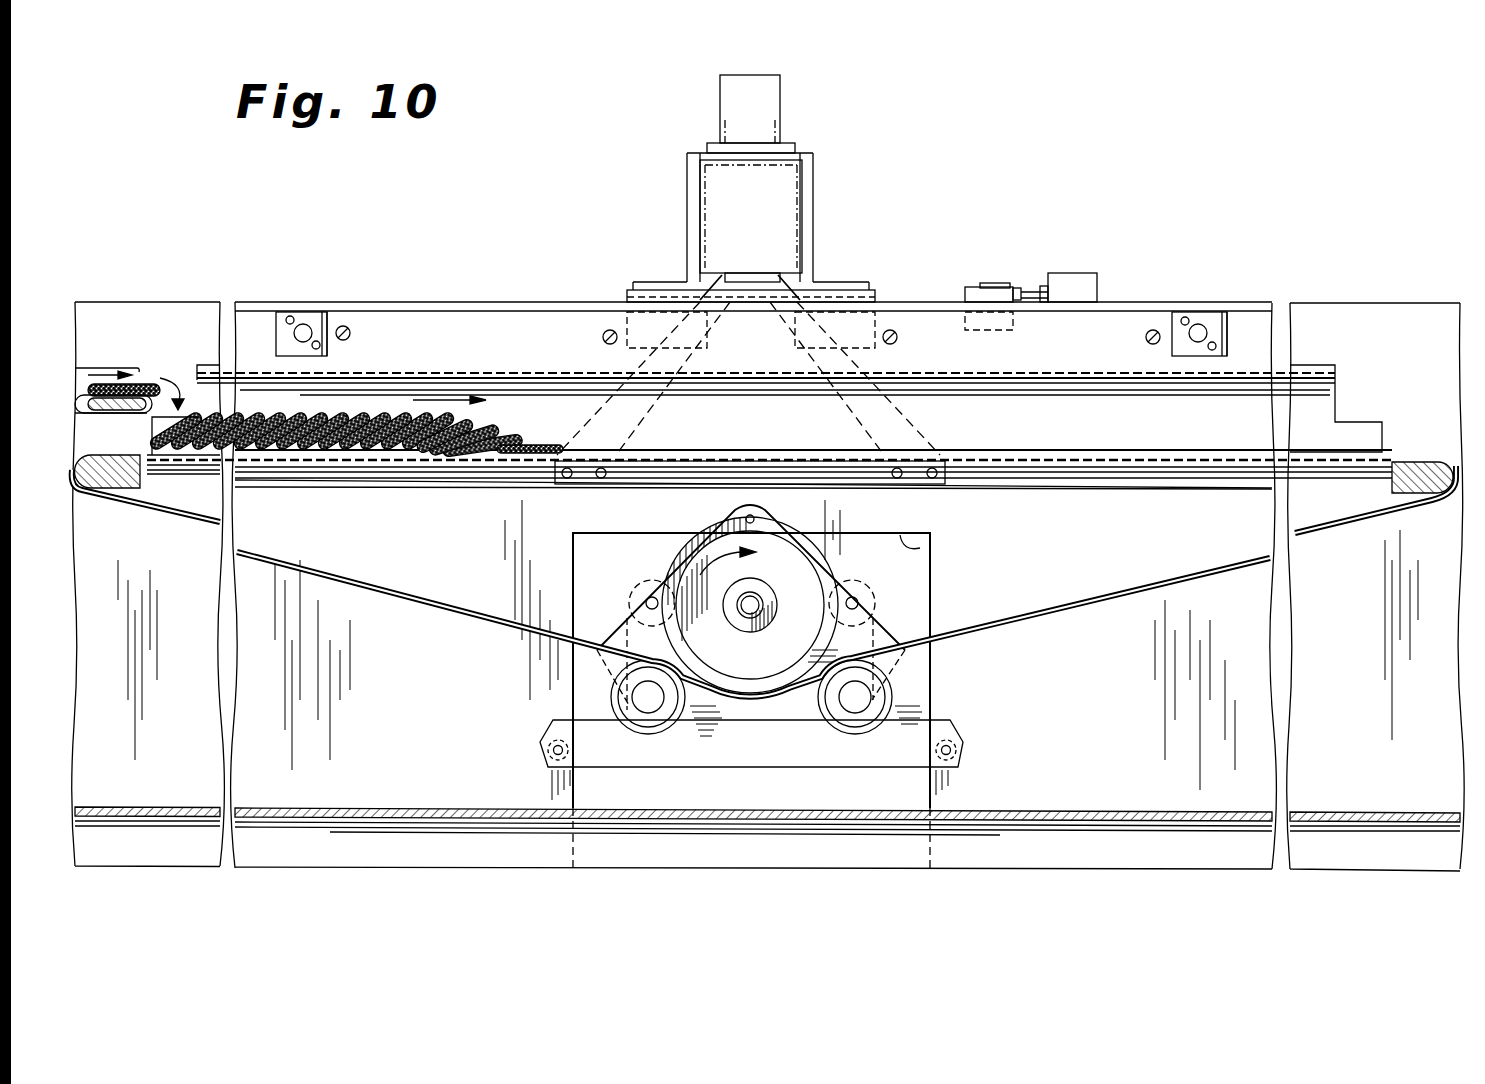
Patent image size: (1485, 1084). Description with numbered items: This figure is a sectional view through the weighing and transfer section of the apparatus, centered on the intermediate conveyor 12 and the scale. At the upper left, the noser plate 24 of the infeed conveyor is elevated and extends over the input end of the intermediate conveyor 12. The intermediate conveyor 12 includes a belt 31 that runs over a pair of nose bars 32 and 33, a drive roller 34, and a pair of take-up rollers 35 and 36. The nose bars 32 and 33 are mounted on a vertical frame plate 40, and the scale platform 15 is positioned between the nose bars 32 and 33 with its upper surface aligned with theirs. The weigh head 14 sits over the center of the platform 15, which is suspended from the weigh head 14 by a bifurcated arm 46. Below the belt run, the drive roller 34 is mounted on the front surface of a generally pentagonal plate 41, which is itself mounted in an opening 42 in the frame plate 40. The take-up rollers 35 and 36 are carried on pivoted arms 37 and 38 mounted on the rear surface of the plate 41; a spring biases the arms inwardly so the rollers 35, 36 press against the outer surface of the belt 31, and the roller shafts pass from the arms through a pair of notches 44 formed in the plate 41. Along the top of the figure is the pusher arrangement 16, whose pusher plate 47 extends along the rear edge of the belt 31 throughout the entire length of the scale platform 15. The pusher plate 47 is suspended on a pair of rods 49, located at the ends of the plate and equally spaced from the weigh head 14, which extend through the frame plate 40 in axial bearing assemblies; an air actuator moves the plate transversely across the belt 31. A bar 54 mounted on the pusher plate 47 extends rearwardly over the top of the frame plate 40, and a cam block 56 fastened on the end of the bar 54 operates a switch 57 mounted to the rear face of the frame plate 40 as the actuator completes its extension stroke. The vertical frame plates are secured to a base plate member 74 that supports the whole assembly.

The intermediate conveyor 12 is at (1160, 452).
The weigh head 14 is at (828, 123).
The scale platform 15 is at (660, 468).
The pusher arrangement 16 is at (1228, 322).
The noser plate 24 is at (140, 378).
The belt 31 is at (1100, 602).
The nose bar 32 is at (130, 490).
The nose bar 33 is at (1407, 468).
The drive roller 34 is at (745, 690).
The take-up roller 35 is at (640, 700).
The take-up roller 36 is at (885, 697).
The pivoted arm 37 is at (597, 649).
The pivoted arm 38 is at (870, 635).
The vertical frame plate 40 is at (460, 302).
The pentagonal plate 41 is at (795, 765).
The opening 42 is at (905, 538).
The notch 44 is at (920, 790).
The bifurcated arm 46 is at (790, 288).
The pusher plate 47 is at (1312, 415).
The rod 49 is at (1200, 332).
The bar 54 is at (975, 290).
The cam block 56 is at (998, 288).
The switch 57 is at (1077, 278).
The base plate member 74 is at (1305, 860).